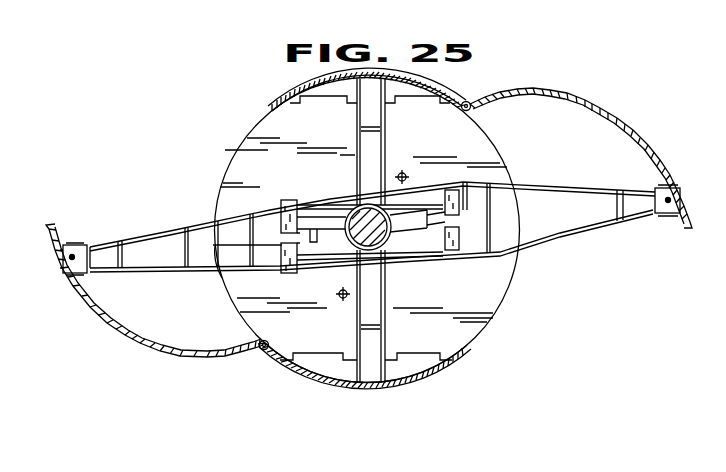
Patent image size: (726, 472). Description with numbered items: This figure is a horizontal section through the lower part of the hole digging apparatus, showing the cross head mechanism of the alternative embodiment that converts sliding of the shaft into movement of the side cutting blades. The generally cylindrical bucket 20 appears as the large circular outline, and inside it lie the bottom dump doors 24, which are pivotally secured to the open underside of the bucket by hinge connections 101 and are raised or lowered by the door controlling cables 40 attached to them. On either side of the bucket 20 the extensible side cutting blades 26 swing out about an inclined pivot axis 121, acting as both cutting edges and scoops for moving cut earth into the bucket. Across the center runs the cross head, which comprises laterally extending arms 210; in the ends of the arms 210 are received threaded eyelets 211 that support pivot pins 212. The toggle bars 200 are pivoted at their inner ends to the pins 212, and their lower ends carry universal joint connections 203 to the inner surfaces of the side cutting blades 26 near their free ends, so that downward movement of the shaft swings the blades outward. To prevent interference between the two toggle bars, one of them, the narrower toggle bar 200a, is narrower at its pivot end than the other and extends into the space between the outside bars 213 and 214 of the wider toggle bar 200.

The bucket 20 is at (424, 373).
The bottom dump door 24 is at (242, 163).
The side cutting blade 26 is at (644, 146).
The door controlling cable 40 is at (403, 170).
The hinge connection 101 is at (421, 100).
The inclined pivot axis 121 is at (471, 109).
The toggle bar 200 is at (594, 218).
The narrower toggle bar 200a is at (154, 271).
The universal joint connection 203 is at (677, 217).
The laterally extending arm 210 is at (407, 230).
The threaded eyelet 211 is at (444, 232).
The pivot pin 212 is at (462, 178).
The outside bar 213 is at (316, 268).
The outside bar 214 is at (316, 198).